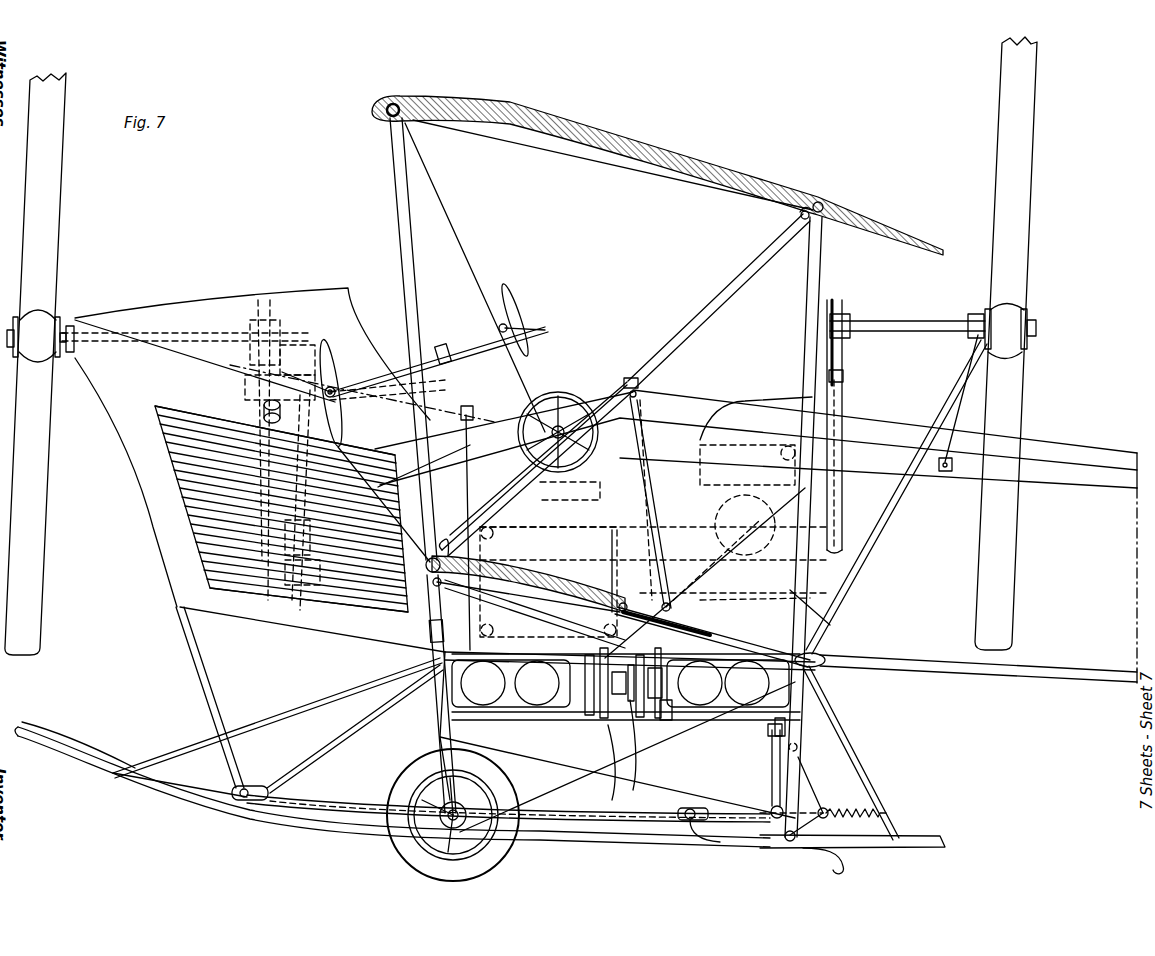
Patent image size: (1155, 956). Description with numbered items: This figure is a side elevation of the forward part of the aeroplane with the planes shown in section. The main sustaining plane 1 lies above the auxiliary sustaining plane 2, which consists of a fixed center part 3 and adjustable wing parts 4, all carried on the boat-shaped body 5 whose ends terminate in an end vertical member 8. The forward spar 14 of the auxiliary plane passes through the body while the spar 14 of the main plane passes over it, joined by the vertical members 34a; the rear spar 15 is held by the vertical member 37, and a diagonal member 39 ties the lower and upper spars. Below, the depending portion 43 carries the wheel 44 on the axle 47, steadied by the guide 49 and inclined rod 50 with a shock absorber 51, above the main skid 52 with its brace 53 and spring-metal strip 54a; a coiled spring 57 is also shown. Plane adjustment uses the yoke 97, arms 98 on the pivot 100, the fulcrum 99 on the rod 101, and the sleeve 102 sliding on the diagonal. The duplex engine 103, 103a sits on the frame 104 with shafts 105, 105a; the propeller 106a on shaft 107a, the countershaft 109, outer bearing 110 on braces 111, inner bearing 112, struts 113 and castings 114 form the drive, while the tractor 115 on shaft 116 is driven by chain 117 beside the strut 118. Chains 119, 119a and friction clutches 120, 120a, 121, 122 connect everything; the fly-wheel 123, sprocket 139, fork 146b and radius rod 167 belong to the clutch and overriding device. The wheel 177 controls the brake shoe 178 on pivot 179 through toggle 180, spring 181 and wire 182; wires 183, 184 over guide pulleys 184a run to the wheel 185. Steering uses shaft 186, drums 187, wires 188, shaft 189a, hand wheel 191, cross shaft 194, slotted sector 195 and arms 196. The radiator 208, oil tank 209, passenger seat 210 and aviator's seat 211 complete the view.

The main sustaining plane 1 is at (630, 143).
The auxiliary sustaining plane 2 is at (515, 570).
The fixed center part 3 is at (750, 642).
The adjustable wing part 4 is at (545, 575).
The body 5 is at (1021, 561).
The end vertical member 8 is at (200, 650).
The forward spar 14 is at (400, 100).
The spar 15 is at (822, 203).
The vertical member 34a is at (412, 283).
The vertical member 37 is at (822, 274).
The diagonal member 39 is at (688, 332).
The depending portion 43 is at (443, 738).
The wheel 44 is at (410, 850).
The axle 47 is at (452, 824).
The guide or brace 49 is at (340, 800).
The inclined rod 50 is at (453, 738).
The shock absorber 51 is at (428, 622).
The main skid 52 is at (185, 803).
The brace 53 is at (310, 708).
The strip of spring metal 54a is at (70, 755).
The coiled spring 57 is at (345, 725).
The yoke 97 is at (612, 530).
The arm 98 is at (670, 580).
The fulcrum 99 is at (672, 608).
The pivot 100 is at (700, 540).
The rod 101 is at (655, 506).
The sleeve 102 is at (642, 386).
The engine 103 is at (512, 695).
The engine member 103a is at (735, 706).
The frame 104 is at (553, 715).
The engine shaft 105 is at (570, 705).
The engine shaft 105a is at (672, 712).
The propeller 106a is at (1012, 368).
The propeller shaft 107a is at (885, 322).
The countershaft 109 is at (748, 590).
The outer bearing 110 is at (972, 332).
The brace 111 is at (890, 495).
The inner bearing 112 is at (810, 330).
The strut 113 is at (845, 355).
The casting 114 is at (822, 380).
The tractor 115 is at (40, 540).
The tractor shaft 116 is at (70, 320).
The chain 117 is at (330, 300).
The strut 118 is at (280, 437).
The chain 119 is at (590, 605).
The chain 119a is at (700, 633).
The friction clutch 120 is at (652, 705).
The friction clutch 120a is at (615, 700).
The friction clutch 121 is at (830, 620).
The friction clutch 122 is at (300, 625).
The fly-wheel 123 is at (684, 688).
The sprocket 139 is at (622, 796).
The fork 146b is at (826, 658).
The radius rod 167 is at (580, 700).
The wheel 177 is at (598, 378).
The brake shoe 178 is at (810, 850).
The pivot 179 is at (690, 806).
The toggle 180 is at (818, 805).
The spring 181 is at (858, 810).
The wire 182 is at (770, 780).
The wire 183 is at (468, 258).
The wire 184 is at (500, 485).
The guide pulley 184a is at (810, 205).
The wheel 185 is at (558, 392).
The shaft 186 is at (320, 368).
The drum 187 is at (262, 410).
The wire 188 is at (395, 490).
The shaft 189a is at (455, 345).
The hand wheel 191 is at (522, 330).
The cross shaft 194 is at (325, 400).
The slotted sector 195 is at (375, 395).
The arm 196 is at (338, 418).
The radiator 208 is at (195, 530).
The oil tank 209 is at (745, 525).
The passenger seat 210 is at (756, 491).
The aviator's seat 211 is at (548, 559).